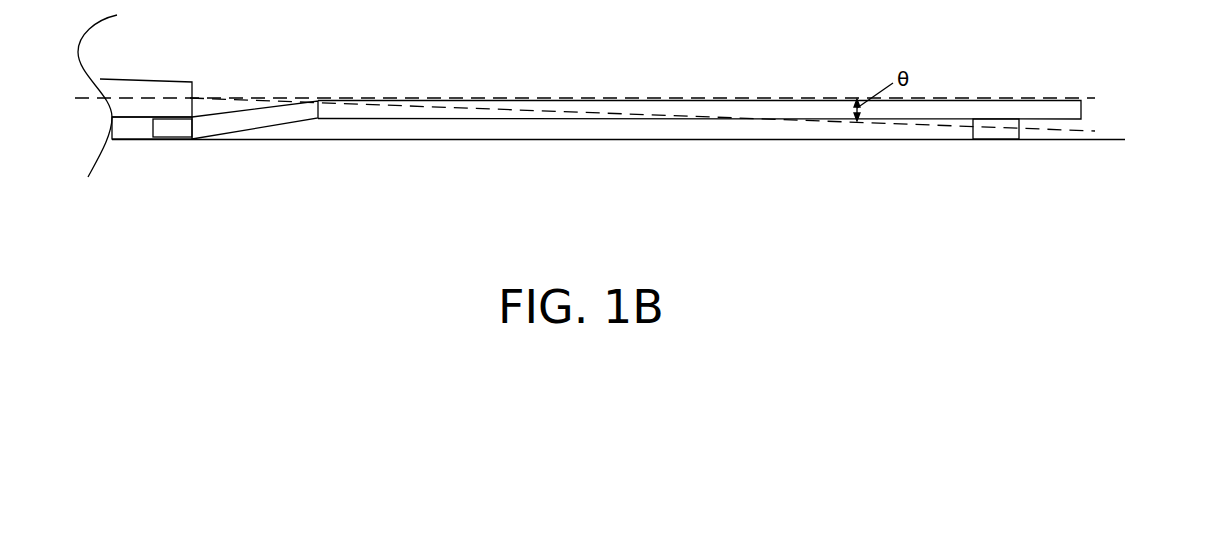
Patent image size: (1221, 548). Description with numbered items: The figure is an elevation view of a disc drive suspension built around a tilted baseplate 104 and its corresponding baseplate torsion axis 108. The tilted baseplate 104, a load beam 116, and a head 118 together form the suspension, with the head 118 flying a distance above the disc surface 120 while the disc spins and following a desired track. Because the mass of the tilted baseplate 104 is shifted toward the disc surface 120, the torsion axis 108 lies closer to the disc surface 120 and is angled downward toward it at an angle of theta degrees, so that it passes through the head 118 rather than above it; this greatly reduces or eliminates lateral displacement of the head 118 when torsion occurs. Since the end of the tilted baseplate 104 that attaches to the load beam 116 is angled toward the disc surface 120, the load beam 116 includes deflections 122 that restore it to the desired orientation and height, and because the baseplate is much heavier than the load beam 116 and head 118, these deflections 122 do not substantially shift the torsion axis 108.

The tilted baseplate 104 is at (148, 79).
The baseplate torsion axis 108 is at (1068, 132).
The load beam 116 is at (565, 100).
The head 118 is at (993, 139).
The disc surface 120 is at (693, 140).
The deflections 122 is at (192, 139).